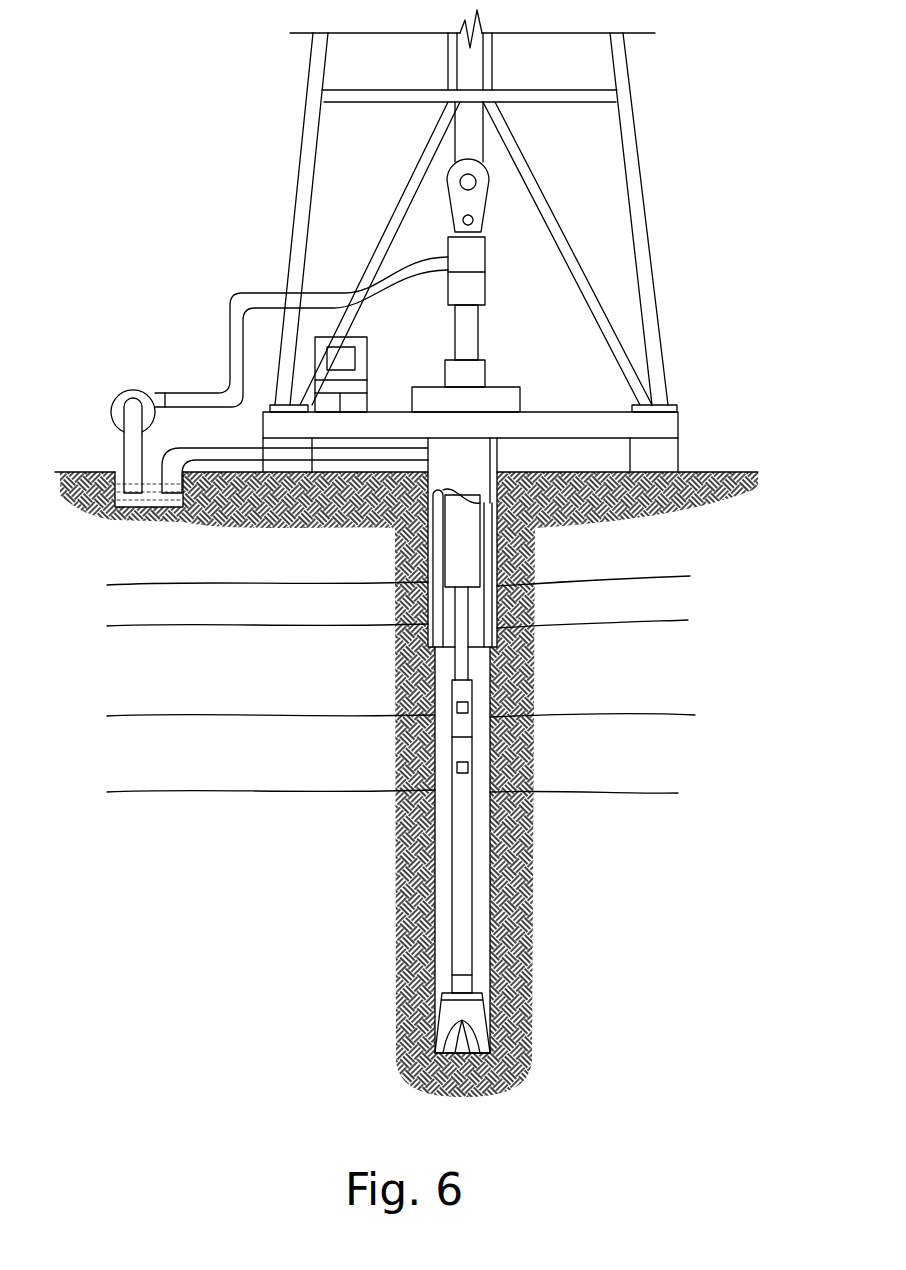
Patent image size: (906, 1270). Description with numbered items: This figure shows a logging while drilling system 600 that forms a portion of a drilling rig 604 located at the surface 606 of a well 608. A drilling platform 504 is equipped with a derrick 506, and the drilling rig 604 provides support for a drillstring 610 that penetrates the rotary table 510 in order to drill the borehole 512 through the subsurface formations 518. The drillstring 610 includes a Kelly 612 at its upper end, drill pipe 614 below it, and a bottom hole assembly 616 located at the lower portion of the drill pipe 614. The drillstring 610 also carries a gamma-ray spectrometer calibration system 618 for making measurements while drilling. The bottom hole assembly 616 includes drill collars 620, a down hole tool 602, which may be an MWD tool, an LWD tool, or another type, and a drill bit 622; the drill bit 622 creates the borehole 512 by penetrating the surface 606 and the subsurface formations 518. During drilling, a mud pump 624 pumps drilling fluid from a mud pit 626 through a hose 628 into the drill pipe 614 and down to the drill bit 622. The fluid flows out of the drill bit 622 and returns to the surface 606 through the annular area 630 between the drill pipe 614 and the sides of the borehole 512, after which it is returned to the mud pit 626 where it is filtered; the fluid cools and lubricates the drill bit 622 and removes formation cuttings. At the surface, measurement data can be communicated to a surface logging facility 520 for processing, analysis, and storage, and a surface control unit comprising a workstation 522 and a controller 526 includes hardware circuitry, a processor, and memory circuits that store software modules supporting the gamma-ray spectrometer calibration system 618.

The logging while drilling system 600 is at (184, 116).
The derrick 506 is at (635, 115).
The drilling rig 604 is at (519, 211).
The hose 628 is at (230, 292).
The mud pump 624 is at (140, 390).
The surface logging facility 520 is at (379, 348).
The workstation 522 is at (367, 352).
The rotary table 510 is at (428, 388).
The Kelly 612 is at (478, 333).
The controller 526 is at (356, 358).
The drilling platform 504 is at (680, 412).
The surface 606 is at (700, 472).
The well 608 is at (508, 463).
The drill collars 620 is at (480, 552).
The drill pipe 614 is at (462, 620).
The annular area 630 is at (482, 687).
The subsurface formations 518 is at (82, 580).
The gamma-ray spectrometer calibration system 618 is at (475, 771).
The bottom hole assembly 616 is at (377, 642).
The drillstring 610 is at (544, 853).
The borehole 512 is at (480, 924).
The down hole tool 602 is at (543, 771).
The drill bit 622 is at (468, 1012).
The mud pit 626 is at (132, 507).